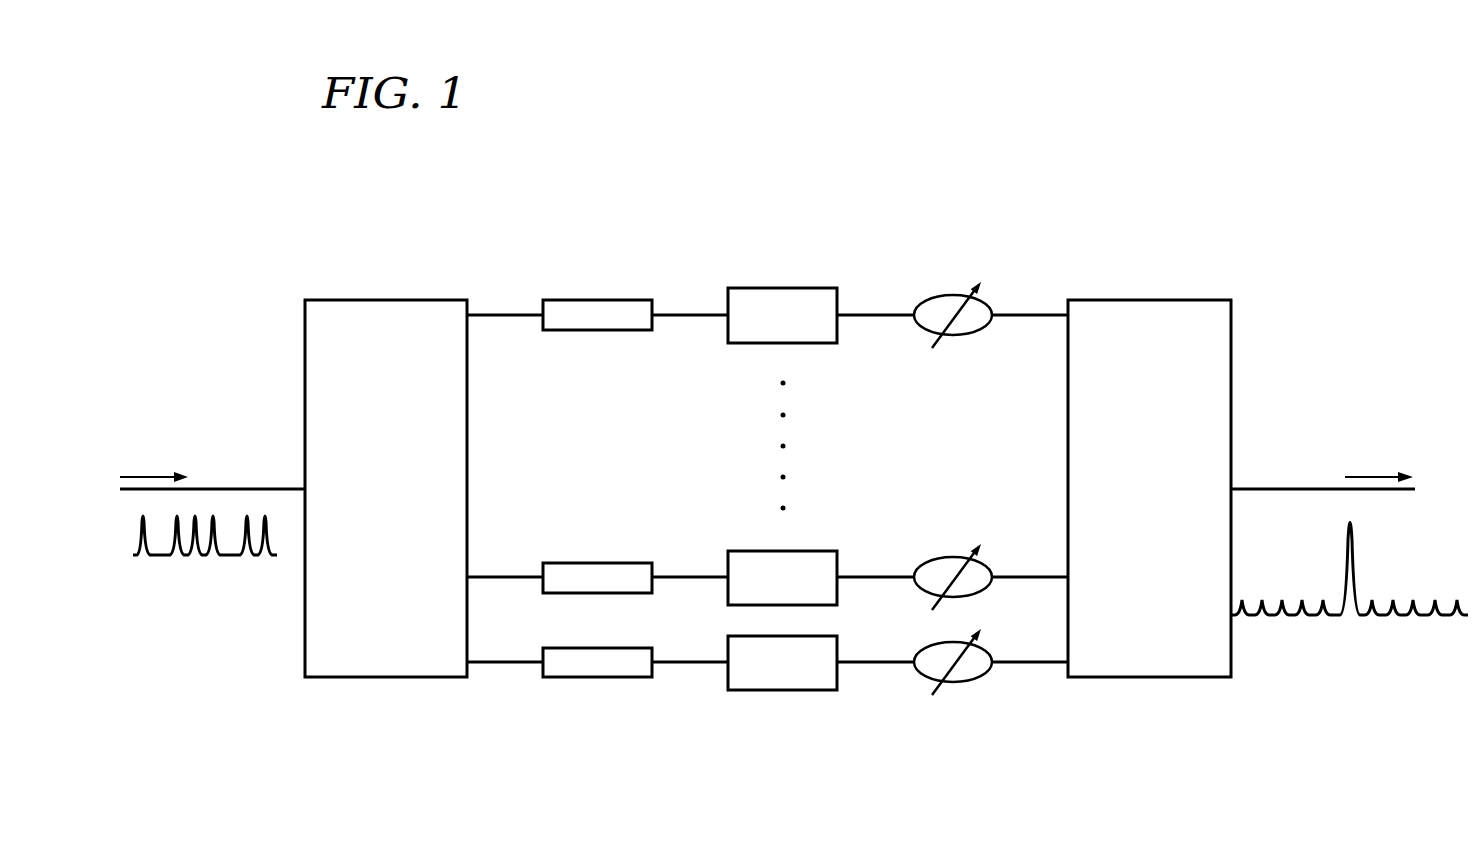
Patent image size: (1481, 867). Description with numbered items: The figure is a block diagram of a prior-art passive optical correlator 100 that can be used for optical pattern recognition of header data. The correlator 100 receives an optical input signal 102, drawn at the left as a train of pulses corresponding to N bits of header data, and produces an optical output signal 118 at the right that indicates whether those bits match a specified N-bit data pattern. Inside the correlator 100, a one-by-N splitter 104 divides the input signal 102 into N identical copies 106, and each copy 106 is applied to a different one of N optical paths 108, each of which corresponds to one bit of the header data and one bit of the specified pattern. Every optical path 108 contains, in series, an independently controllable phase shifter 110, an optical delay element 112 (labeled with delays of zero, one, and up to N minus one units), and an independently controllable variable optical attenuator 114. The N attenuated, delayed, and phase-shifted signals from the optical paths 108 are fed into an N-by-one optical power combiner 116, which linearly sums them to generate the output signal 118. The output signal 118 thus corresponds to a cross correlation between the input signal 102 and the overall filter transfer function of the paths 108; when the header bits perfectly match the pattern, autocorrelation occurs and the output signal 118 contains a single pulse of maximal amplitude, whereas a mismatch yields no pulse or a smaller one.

The passive optical correlator 100 is at (411, 157).
The optical input signal 102 is at (244, 487).
The (1×N) splitter 104 is at (400, 300).
The optical signal copies 106 is at (508, 313).
The optical paths 108 is at (787, 240).
The phase shifter 110 is at (592, 299).
The optical delay element 112 is at (770, 288).
The variable optical attenuator 114 is at (972, 333).
The (N×1) optical power combiner 116 is at (1165, 300).
The optical output signal 118 is at (1287, 487).